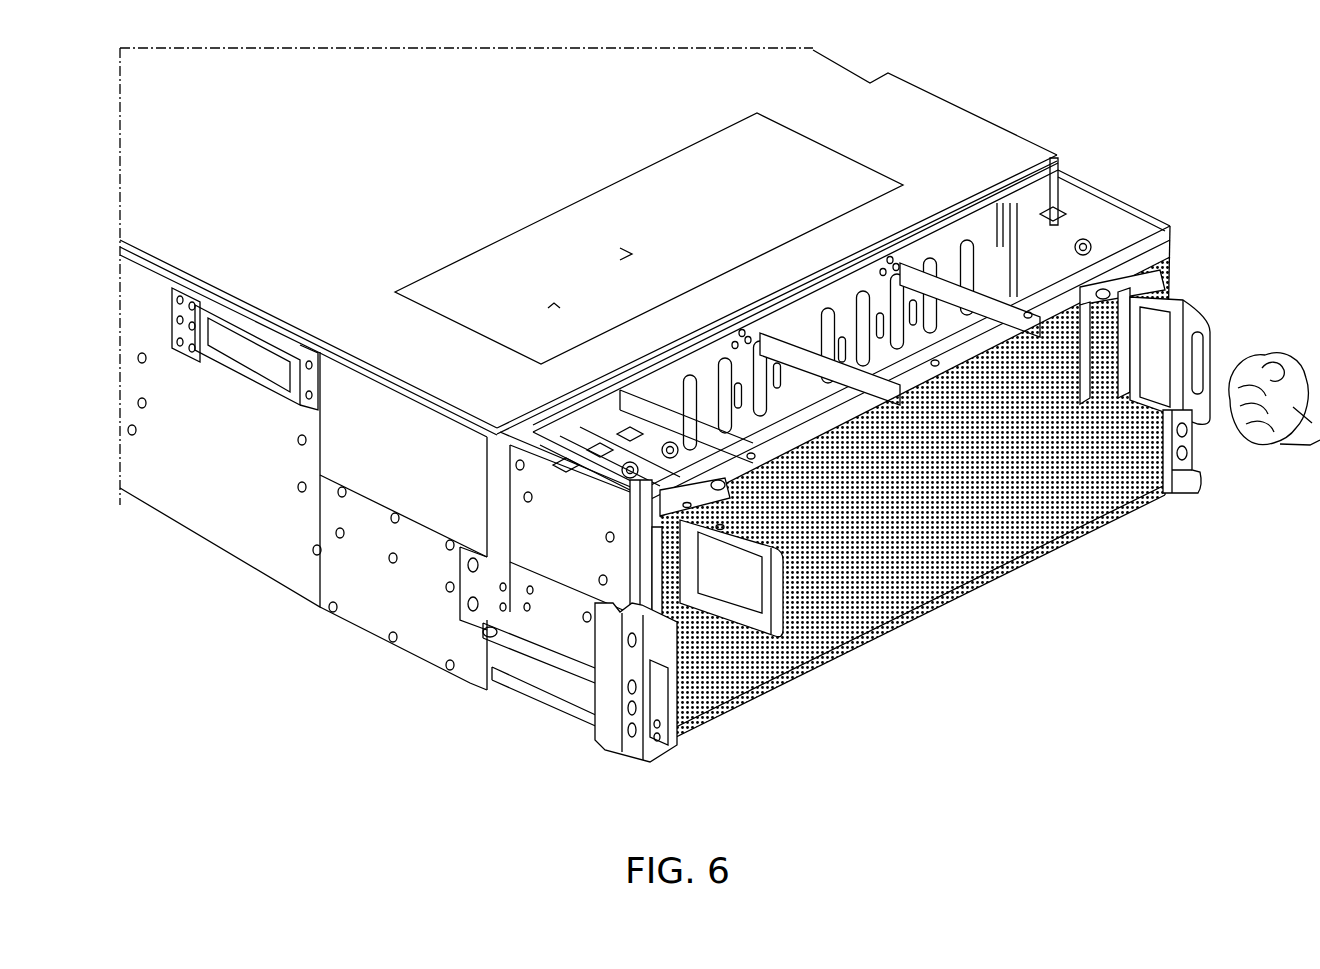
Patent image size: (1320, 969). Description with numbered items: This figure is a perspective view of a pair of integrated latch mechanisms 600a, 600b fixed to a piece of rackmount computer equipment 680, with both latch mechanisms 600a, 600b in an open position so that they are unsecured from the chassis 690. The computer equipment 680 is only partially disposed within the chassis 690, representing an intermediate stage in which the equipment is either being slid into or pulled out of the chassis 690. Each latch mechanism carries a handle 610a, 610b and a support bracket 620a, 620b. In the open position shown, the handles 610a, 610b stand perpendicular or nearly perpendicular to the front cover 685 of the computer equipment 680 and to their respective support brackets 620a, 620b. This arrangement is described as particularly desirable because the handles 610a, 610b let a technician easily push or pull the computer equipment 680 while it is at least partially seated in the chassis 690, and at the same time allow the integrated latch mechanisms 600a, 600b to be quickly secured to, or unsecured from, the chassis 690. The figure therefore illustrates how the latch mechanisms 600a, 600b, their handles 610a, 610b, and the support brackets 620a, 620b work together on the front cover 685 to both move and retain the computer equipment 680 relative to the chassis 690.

The chassis 690 is at (965, 93).
The computer equipment 680 is at (1095, 208).
The front cover 685 is at (953, 565).
The integrated latch mechanism 600a is at (688, 717).
The integrated latch mechanism 600b is at (1124, 468).
The handle 610a is at (793, 637).
The handle 610b is at (1205, 348).
The support bracket 620a is at (742, 707).
The support bracket 620b is at (1097, 440).